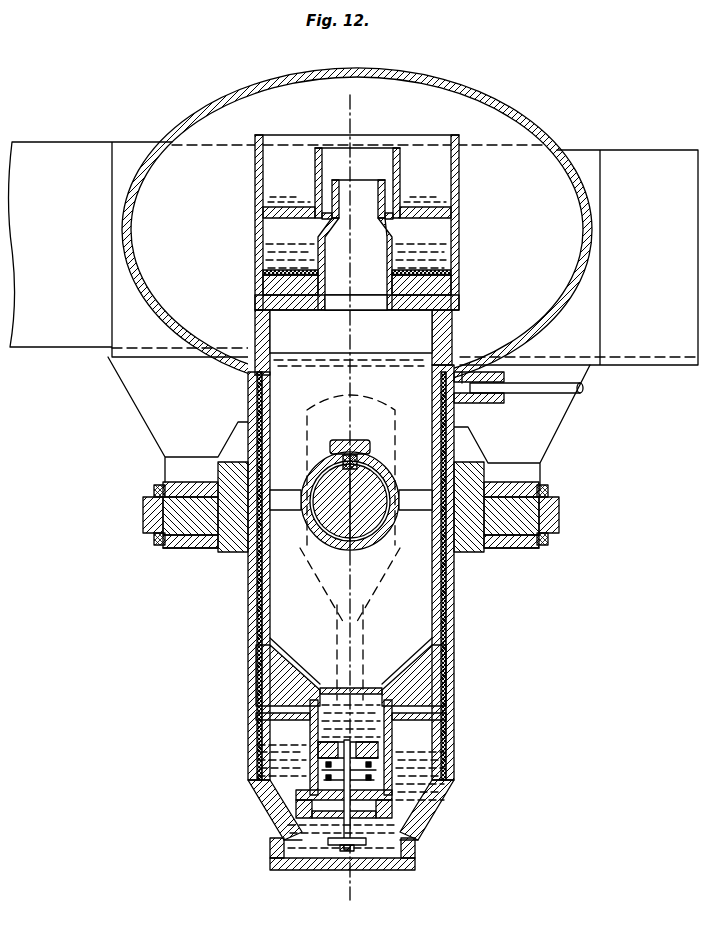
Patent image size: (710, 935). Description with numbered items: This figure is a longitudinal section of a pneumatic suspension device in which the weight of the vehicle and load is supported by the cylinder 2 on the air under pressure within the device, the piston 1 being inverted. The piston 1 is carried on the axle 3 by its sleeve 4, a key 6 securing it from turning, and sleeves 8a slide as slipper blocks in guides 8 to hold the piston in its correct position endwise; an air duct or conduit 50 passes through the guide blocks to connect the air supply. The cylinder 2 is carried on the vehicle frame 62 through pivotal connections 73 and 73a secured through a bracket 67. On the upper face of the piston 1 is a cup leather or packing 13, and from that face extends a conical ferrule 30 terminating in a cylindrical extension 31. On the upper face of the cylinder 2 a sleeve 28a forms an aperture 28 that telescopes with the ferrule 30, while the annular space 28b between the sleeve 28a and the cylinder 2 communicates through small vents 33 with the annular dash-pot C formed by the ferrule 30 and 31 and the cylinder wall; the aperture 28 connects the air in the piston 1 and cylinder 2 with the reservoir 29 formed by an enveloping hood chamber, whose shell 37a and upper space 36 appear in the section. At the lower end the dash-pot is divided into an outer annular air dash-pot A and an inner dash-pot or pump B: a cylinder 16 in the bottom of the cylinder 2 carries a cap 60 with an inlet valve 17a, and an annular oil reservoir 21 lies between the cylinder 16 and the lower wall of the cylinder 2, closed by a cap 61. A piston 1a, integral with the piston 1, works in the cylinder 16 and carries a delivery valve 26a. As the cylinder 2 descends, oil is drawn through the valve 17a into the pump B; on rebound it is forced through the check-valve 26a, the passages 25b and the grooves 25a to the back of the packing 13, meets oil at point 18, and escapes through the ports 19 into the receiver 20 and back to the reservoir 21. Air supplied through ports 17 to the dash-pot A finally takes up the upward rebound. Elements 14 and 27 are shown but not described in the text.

The piston 1 is at (270, 380).
The piston 1a is at (293, 714).
The cylinder 2 is at (459, 197).
The axle 3 is at (396, 479).
The sleeve 4 is at (305, 530).
The key 6 is at (364, 452).
The guides 8 is at (308, 421).
The sleeve 8a is at (362, 420).
The cup leather or packing 13 is at (452, 296).
The piston 14 is at (262, 283).
The cylinder 16 is at (405, 754).
The ports 17 is at (446, 689).
The inlet valve 17a is at (296, 818).
The point 18 is at (348, 556).
The ports 19 is at (382, 549).
The receiver 20 is at (363, 618).
The oil reservoir 21 is at (256, 765).
The grooves 25a is at (262, 586).
The passages 25b is at (312, 678).
The delivery valve 26a is at (312, 800).
The bottom plate of cylinder 27 is at (258, 302).
The aperture 28 is at (357, 183).
The sleeve 28a is at (339, 160).
The annular space 28b is at (425, 197).
The reservoir 29 is at (327, 152).
The ferrule 30 is at (325, 254).
The cylindrical extension 31 is at (339, 201).
The vents 33 is at (290, 211).
The upper space 36 is at (355, 108).
The elliptical shell 37a is at (528, 136).
The air duct or conduit 50 is at (545, 394).
The cap 60 is at (398, 814).
The cap 61 is at (416, 856).
The frame 62 is at (354, 253).
The bracket 67 is at (349, 423).
The pivotal connection 73 is at (143, 520).
The pivotal connection 73a is at (185, 550).
The dash-pot A is at (267, 750).
The dash-pot or pump B is at (424, 750).
The annular dash-pot C is at (425, 236).